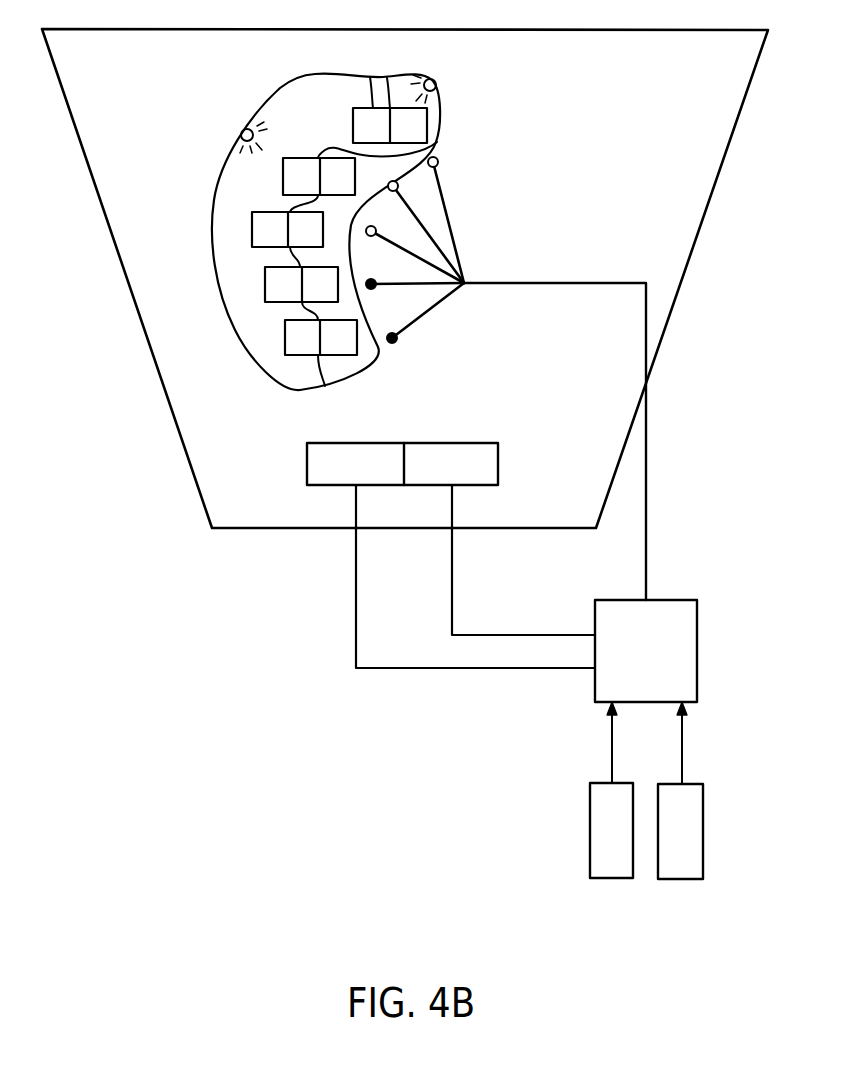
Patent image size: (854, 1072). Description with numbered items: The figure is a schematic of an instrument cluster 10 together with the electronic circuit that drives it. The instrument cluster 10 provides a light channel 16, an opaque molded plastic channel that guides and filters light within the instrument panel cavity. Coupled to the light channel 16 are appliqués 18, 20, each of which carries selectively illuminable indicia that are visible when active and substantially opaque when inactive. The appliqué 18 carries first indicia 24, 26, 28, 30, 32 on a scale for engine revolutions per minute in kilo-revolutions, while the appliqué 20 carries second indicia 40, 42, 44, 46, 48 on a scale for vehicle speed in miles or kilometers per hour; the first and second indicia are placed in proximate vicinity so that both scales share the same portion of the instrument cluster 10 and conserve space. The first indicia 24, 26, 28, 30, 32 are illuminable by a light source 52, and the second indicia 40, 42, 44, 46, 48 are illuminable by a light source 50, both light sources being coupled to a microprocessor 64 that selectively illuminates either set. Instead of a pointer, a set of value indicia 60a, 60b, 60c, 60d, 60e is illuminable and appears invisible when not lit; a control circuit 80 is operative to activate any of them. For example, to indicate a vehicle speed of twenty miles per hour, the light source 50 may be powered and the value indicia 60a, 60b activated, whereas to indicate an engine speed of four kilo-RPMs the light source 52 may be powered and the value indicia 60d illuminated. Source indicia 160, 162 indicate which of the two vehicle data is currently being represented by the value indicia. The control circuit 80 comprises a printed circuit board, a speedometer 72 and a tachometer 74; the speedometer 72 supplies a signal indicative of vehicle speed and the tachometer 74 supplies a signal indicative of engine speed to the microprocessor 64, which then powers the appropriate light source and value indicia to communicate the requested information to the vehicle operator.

The instrument cluster 10 is at (158, 507).
The light channel 16 is at (138, 312).
The appliqué 18 is at (368, 362).
The appliqué 20 is at (280, 90).
The first indicia 24 is at (369, 77).
The first indicia 26 is at (344, 161).
The first indicia 28 is at (281, 242).
The first indicia 30 is at (293, 296).
The first indicia 32 is at (285, 340).
The second indicia 40 is at (343, 357).
The second indicia 42 is at (338, 290).
The second indicia 44 is at (323, 232).
The second indicia 46 is at (356, 183).
The second indicia 48 is at (427, 127).
The light source 50 is at (437, 84).
The light source 52 is at (240, 136).
The value indicia 60a is at (397, 340).
The value indicia 60b is at (377, 286).
The value indicia 60c is at (377, 232).
The value indicia 60d is at (399, 187).
The value indicia 60e is at (439, 163).
The microprocessor 64 is at (683, 600).
The speedometer 72 is at (703, 825).
The tachometer 74 is at (615, 878).
The control circuit 80 is at (551, 746).
The source indicia 160 is at (406, 462).
The source indicia 162 is at (307, 465).